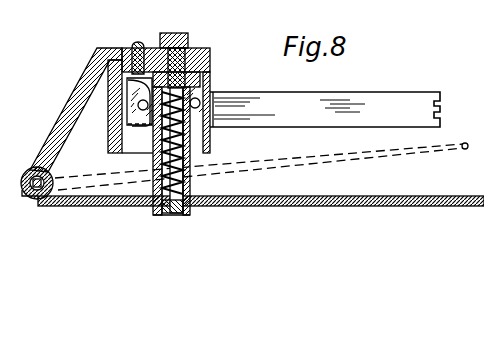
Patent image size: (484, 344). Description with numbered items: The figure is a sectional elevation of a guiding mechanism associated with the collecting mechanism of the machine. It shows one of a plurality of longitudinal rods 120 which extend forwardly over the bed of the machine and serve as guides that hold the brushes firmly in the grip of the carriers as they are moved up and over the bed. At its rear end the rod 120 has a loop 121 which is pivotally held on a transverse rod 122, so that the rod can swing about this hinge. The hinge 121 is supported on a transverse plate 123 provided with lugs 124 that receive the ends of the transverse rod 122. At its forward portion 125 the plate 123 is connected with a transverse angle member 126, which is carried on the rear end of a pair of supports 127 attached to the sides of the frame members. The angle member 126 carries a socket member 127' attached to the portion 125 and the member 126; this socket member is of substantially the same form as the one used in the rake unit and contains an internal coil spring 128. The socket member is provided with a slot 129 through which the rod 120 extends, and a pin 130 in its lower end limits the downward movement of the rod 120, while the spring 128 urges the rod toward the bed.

The longitudinal rod 120 is at (300, 207).
The loop 121 is at (25, 198).
The transverse rod 122 is at (50, 173).
The transverse plate 123 is at (93, 77).
The lug 124 is at (42, 167).
The forward portion 125 is at (190, 57).
The transverse angle member 126 is at (212, 64).
The support 127 is at (325, 96).
The socket member 127' is at (230, 119).
The internal coil spring 128 is at (190, 130).
The slot 129 is at (312, 162).
The pin 130 is at (170, 216).